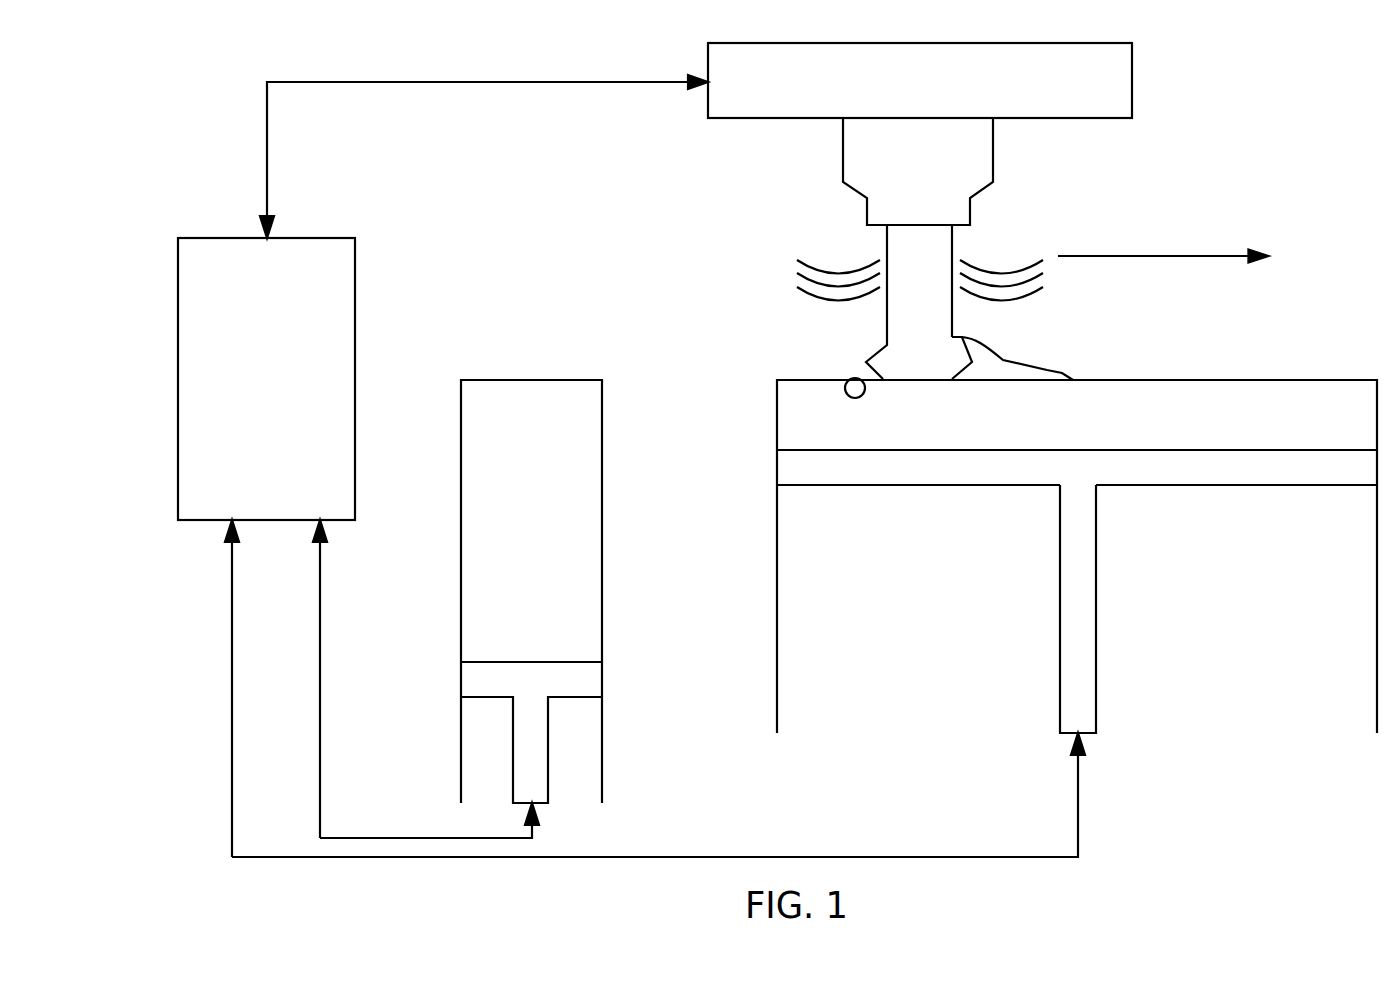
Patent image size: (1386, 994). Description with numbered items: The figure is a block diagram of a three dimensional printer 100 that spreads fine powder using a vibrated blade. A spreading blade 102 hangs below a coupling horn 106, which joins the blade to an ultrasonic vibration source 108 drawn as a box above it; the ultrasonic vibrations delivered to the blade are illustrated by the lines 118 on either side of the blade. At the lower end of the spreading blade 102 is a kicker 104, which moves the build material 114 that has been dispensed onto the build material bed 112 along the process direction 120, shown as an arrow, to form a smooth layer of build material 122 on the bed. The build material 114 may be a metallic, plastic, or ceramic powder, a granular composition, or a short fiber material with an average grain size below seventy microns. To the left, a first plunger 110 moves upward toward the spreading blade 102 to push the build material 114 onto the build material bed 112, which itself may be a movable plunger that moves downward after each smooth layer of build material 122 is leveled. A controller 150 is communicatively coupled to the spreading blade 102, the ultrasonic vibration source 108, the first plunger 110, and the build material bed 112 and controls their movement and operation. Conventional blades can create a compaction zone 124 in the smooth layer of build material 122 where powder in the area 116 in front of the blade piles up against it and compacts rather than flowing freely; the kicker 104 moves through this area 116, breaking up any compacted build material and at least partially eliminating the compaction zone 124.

The 3D printer 100 is at (177, 54).
The spreading blade 102 is at (885, 236).
The kicker 104 is at (953, 353).
The coupling horn 106 is at (993, 172).
The ultrasonic vibration source 108 is at (903, 92).
The first plunger 110 is at (474, 681).
The build material bed 112 is at (1245, 488).
The build material 114 is at (540, 390).
The area in front of the spreading blade 116 is at (978, 363).
The vibration lines 118 is at (1000, 272).
The process direction 120 is at (1198, 256).
The smooth layer of build material 122 is at (1090, 378).
The compaction zone 124 is at (853, 378).
The controller 150 is at (250, 404).